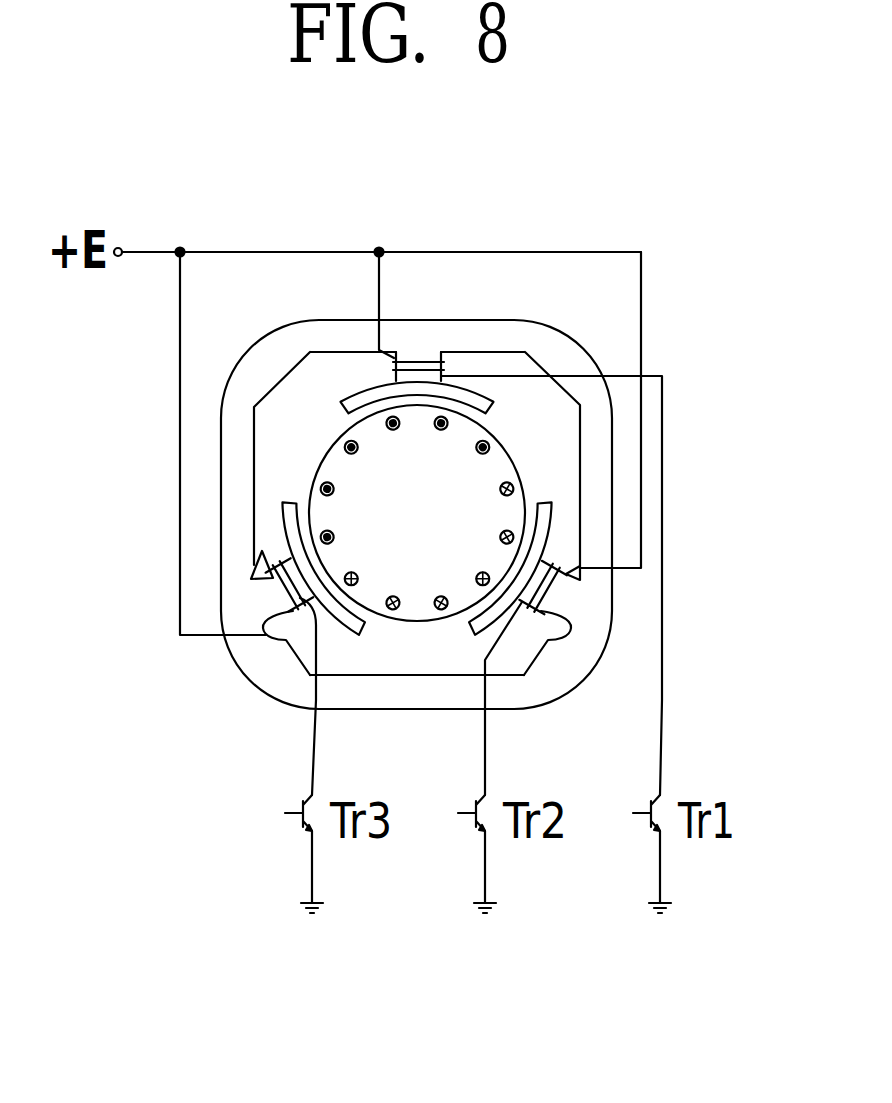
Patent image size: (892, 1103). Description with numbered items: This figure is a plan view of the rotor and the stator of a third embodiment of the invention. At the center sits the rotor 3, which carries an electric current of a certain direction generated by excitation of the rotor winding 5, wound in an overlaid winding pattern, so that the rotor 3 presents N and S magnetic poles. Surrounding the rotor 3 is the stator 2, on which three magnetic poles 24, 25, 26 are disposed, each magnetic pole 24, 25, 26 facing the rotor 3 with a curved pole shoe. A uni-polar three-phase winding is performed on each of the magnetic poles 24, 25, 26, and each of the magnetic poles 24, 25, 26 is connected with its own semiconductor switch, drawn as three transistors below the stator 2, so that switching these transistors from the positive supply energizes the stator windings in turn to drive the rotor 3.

The stator 2 is at (232, 488).
The rotor 3 is at (507, 452).
The rotor winding 5 is at (345, 440).
The magnetic pole 24 is at (419, 381).
The magnetic pole 25 is at (548, 562).
The magnetic pole 26 is at (295, 562).